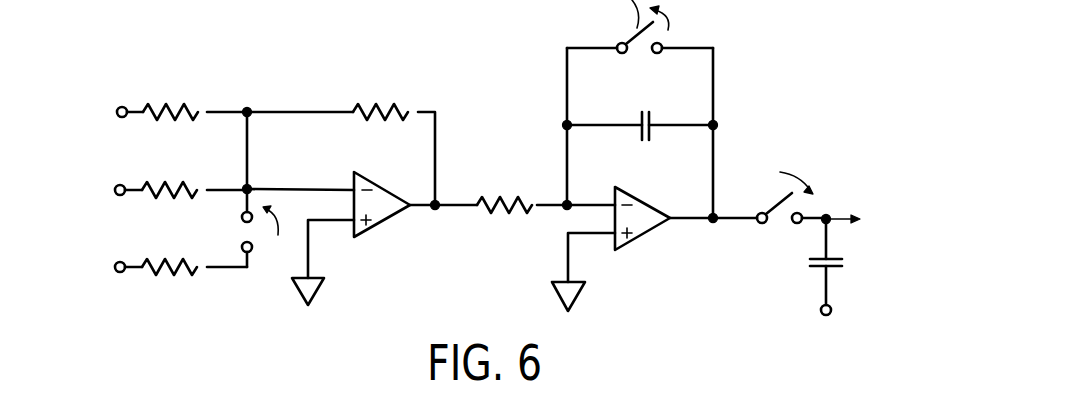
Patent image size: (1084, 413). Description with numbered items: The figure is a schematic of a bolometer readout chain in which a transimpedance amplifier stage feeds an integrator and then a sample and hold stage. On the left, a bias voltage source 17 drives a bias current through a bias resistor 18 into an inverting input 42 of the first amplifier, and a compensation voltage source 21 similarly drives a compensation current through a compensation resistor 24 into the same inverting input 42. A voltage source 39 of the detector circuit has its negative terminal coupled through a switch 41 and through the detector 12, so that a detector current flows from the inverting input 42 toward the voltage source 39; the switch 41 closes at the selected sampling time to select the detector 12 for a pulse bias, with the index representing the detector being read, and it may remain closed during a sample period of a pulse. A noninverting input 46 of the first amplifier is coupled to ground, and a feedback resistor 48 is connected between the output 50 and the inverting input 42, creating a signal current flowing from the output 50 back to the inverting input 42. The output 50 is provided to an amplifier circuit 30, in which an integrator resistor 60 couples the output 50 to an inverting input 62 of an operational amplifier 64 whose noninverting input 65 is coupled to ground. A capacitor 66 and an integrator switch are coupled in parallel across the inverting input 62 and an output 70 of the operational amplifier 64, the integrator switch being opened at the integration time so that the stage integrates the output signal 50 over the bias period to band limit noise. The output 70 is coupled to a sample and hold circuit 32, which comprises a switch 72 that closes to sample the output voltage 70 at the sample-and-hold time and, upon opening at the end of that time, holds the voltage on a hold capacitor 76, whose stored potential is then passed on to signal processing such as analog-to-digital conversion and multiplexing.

The detector 12 is at (182, 272).
The voltage source Vbias 17 is at (116, 104).
The bias resistor Rbias 18 is at (143, 105).
The voltage source Vcomp 21 is at (118, 185).
The compensation resistor Rcomp 24 is at (185, 196).
The amplifier circuit 30 is at (750, 44).
The sample and hold circuit 32 is at (850, 151).
The voltage source 39 is at (118, 262).
The switch 41 is at (262, 242).
The inverting input 42 is at (302, 187).
The noninverting input 46 is at (330, 233).
The feedback resistor Rf 48 is at (360, 105).
The output Vout 50 is at (422, 200).
The integrator resistor Rint 60 is at (493, 212).
The inverting input 62 is at (589, 203).
The operational amplifier 64 is at (647, 197).
The noninverting input 65 is at (588, 240).
The capacitor 66 is at (655, 118).
The output 70 is at (732, 207).
The switch 72 is at (780, 212).
The capacitor Cs/h 76 is at (844, 273).